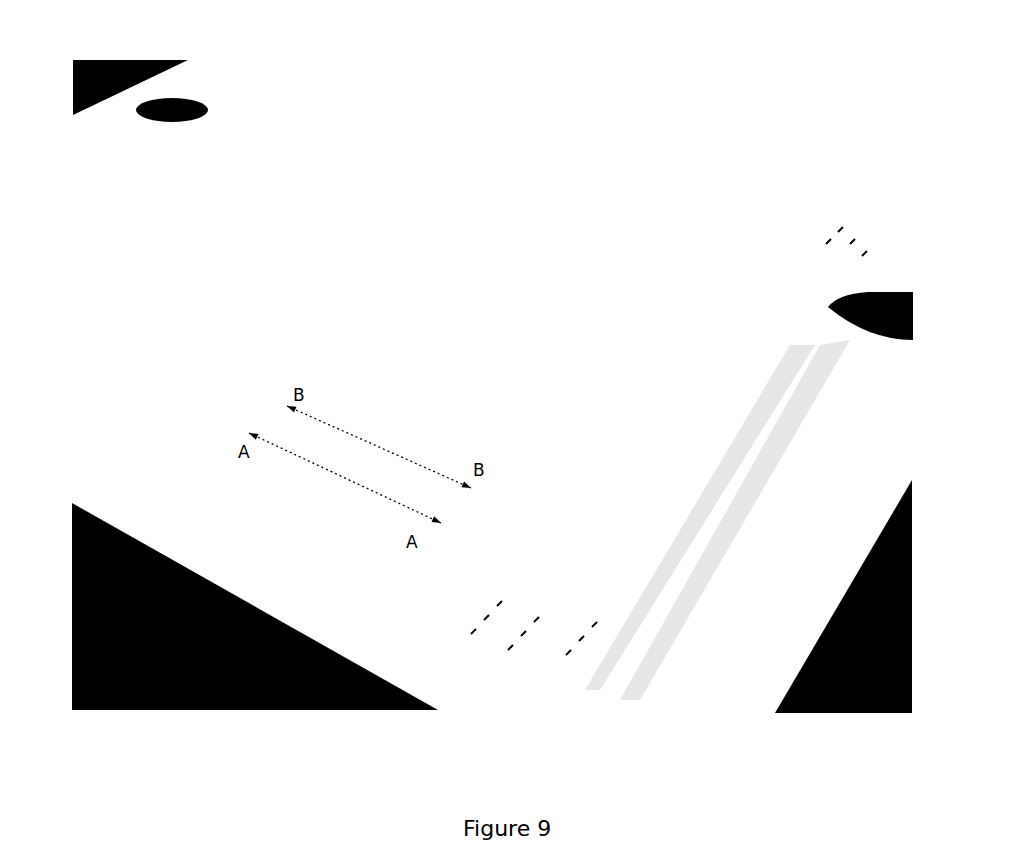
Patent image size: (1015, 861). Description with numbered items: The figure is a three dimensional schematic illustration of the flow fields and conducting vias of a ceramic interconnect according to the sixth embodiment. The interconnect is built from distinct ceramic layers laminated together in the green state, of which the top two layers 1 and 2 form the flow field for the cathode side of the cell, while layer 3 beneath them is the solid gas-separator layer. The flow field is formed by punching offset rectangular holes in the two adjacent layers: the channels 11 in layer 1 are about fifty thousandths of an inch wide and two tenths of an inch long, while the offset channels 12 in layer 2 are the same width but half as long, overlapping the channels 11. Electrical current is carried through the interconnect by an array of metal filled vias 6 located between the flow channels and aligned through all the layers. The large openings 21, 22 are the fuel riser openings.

The top ceramic layer 1 is at (901, 450).
The second ceramic layer 2 is at (862, 241).
The solid gas-separator layer 3 is at (871, 370).
The conductive material filled vias 6 is at (573, 649).
The channels 11 is at (515, 644).
The offset channels 12 is at (478, 629).
The fuel riser opening 21 is at (921, 318).
The fuel riser opening 22 is at (194, 86).